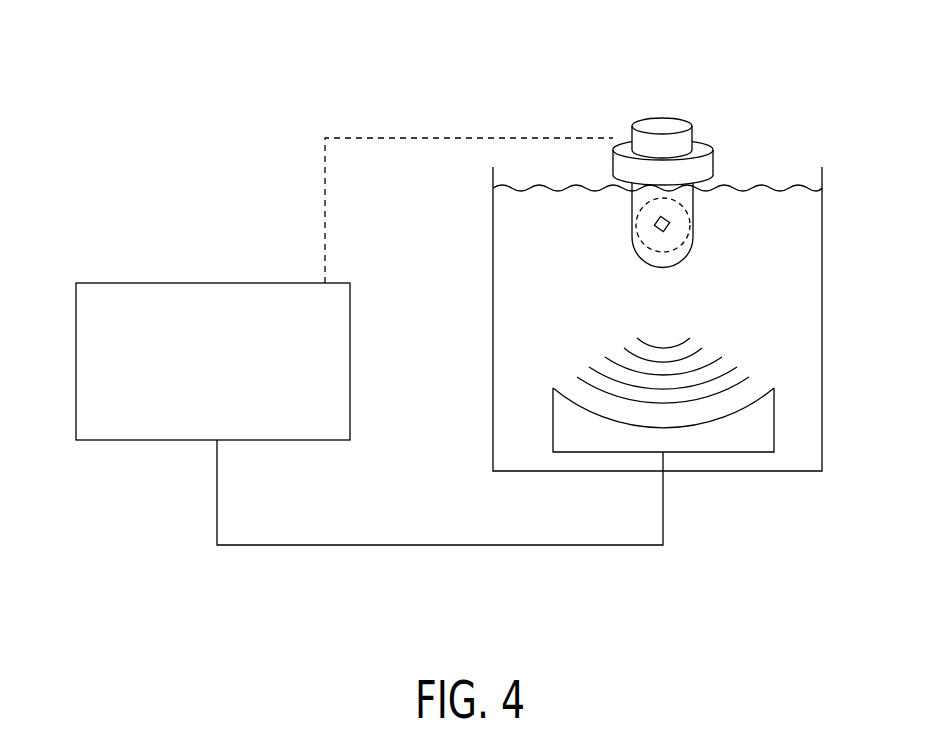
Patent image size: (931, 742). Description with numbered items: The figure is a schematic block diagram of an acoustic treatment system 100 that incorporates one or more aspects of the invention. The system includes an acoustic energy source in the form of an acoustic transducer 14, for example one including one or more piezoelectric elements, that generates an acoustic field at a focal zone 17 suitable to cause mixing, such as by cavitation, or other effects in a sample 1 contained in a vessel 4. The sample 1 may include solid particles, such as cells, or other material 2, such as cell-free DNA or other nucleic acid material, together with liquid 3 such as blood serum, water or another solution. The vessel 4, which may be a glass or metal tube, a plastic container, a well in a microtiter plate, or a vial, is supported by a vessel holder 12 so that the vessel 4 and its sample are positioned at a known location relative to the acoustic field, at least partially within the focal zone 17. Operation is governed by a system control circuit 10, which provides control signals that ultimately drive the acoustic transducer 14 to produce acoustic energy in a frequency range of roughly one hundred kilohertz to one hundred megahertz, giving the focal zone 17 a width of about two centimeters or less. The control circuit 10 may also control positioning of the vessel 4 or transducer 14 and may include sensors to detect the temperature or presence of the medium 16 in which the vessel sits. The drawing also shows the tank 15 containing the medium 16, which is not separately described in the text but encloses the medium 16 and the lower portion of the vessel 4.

The acoustic treatment system 100 is at (177, 90).
The system control circuit 10 is at (76, 358).
The sample 1 is at (712, 220).
The material 2 is at (654, 226).
The liquid 3 is at (686, 250).
The vessel 4 is at (693, 125).
The vessel holder 12 is at (615, 170).
The focal zone 17 is at (652, 256).
The acoustic transducer 14 is at (735, 443).
The water tank 15 is at (823, 333).
The medium 16 is at (800, 280).